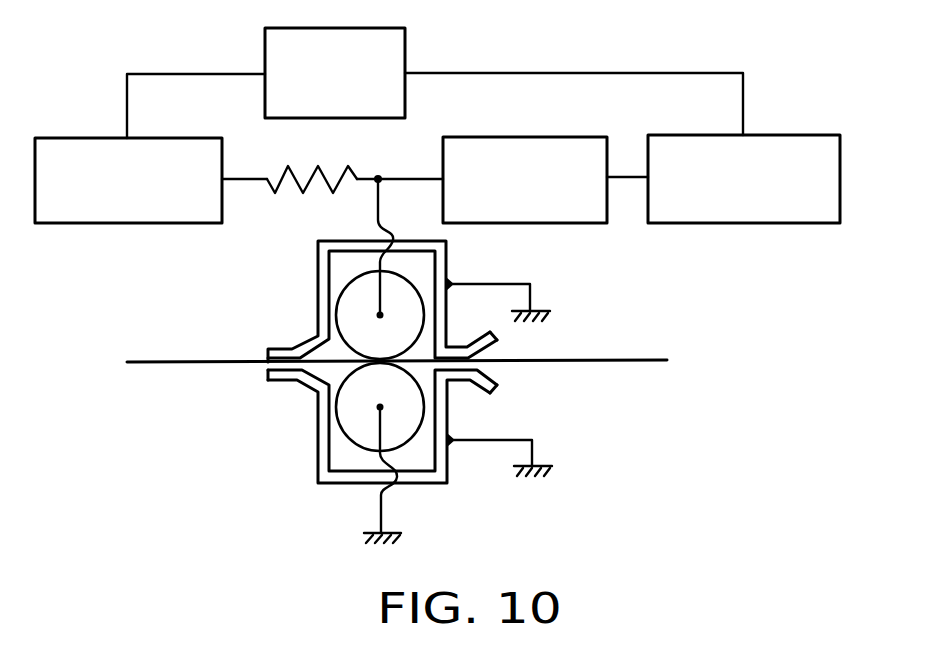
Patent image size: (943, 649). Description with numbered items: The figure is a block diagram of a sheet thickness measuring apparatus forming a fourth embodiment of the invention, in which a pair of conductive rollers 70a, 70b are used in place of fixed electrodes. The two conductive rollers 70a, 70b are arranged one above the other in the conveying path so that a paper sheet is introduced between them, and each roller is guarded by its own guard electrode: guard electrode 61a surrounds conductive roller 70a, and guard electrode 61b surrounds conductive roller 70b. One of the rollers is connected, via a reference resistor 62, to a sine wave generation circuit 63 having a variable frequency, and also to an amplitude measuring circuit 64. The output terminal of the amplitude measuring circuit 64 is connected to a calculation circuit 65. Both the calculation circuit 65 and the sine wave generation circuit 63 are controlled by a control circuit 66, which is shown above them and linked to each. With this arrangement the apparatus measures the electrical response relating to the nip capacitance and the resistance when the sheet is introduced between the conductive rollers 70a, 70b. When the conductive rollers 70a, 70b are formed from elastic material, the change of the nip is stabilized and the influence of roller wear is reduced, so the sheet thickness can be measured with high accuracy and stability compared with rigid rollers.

The control circuit 66 is at (405, 55).
The sine wave generation circuit 63 is at (158, 138).
The reference resistor 62 is at (322, 172).
The amplitude measuring circuit 64 is at (530, 136).
The calculation circuit 65 is at (768, 135).
The conductive roller 70b is at (283, 348).
The conductive roller 70a is at (278, 383).
The guard electrode 61b is at (347, 308).
The guard electrode 61a is at (355, 422).